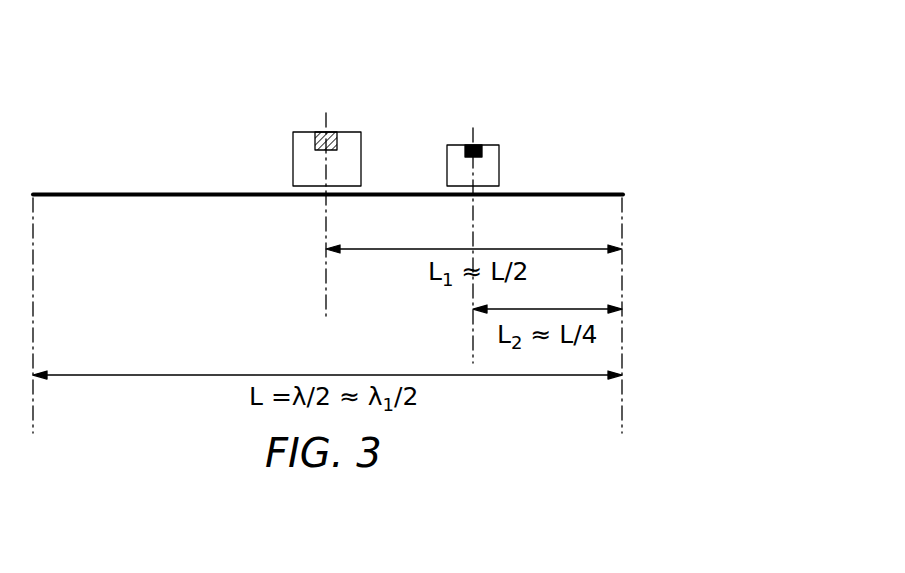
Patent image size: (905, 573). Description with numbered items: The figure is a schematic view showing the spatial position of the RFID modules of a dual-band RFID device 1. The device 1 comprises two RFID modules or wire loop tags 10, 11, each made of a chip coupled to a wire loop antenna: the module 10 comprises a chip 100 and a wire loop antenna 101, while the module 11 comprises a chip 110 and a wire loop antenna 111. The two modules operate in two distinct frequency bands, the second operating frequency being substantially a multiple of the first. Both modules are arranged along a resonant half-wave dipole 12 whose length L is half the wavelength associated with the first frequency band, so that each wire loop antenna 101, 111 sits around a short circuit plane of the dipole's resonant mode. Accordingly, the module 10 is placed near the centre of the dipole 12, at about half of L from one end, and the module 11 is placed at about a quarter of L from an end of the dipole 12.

The RFID device 1 is at (463, 65).
The RFID module 10 is at (275, 122).
The chip 100 is at (333, 132).
The wire loop antenna 101 is at (293, 162).
The RFID module 11 is at (506, 135).
The chip 110 is at (477, 145).
The wire loop antenna 111 is at (499, 167).
The resonant half-wave dipole 12 is at (80, 198).